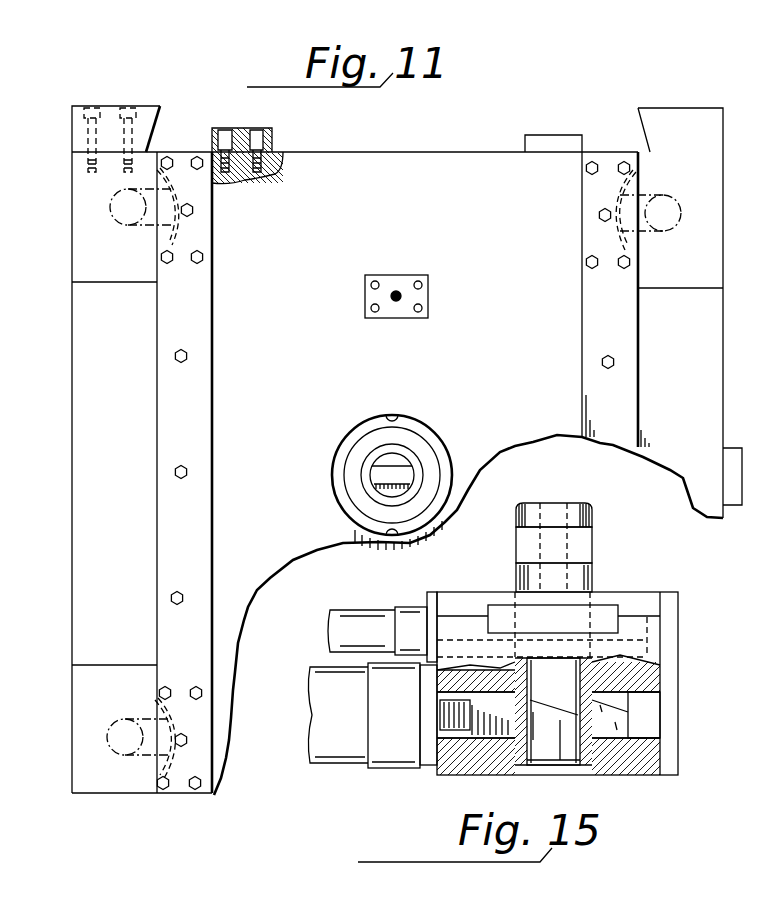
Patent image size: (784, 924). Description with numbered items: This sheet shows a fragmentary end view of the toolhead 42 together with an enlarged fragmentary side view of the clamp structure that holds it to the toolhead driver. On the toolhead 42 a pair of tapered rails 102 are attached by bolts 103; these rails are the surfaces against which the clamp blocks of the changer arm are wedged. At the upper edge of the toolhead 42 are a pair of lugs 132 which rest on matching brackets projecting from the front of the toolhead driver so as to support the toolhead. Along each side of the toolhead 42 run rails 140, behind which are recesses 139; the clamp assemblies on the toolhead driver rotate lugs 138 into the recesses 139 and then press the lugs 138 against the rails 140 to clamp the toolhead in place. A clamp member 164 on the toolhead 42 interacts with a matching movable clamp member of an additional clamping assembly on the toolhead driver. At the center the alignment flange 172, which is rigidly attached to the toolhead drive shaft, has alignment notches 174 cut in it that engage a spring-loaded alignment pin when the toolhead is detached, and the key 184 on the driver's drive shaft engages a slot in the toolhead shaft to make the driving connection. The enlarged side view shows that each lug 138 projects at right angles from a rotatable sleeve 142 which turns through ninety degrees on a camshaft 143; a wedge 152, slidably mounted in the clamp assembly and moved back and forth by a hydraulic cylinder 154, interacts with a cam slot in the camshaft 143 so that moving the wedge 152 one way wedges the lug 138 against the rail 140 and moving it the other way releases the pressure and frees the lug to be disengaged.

In FIG. 11, the toolhead 42 is at (398, 178).
In FIG. 11, the tapered rail 102 is at (148, 106).
In FIG. 11, the bolt 103 is at (128, 106).
In FIG. 11, the lug 132 is at (272, 133).
In FIG. 11, the lug 138 is at (165, 197).
In FIG. 15, the lug 138 is at (582, 540).
In FIG. 11, the recess 139 is at (152, 235).
In FIG. 11, the rail 140 is at (197, 297).
In FIG. 15, the rotatable sleeve 142 is at (582, 578).
In FIG. 15, the camshaft 143 is at (566, 678).
In FIG. 15, the wedge 152 is at (610, 715).
In FIG. 15, the hydraulic cylinder 154 is at (332, 758).
In FIG. 11, the clamp member 164 is at (395, 278).
In FIG. 11, the alignment flange 172 is at (425, 448).
In FIG. 11, the alignment notch 174 is at (392, 423).
In FIG. 11, the key 184 is at (375, 475).